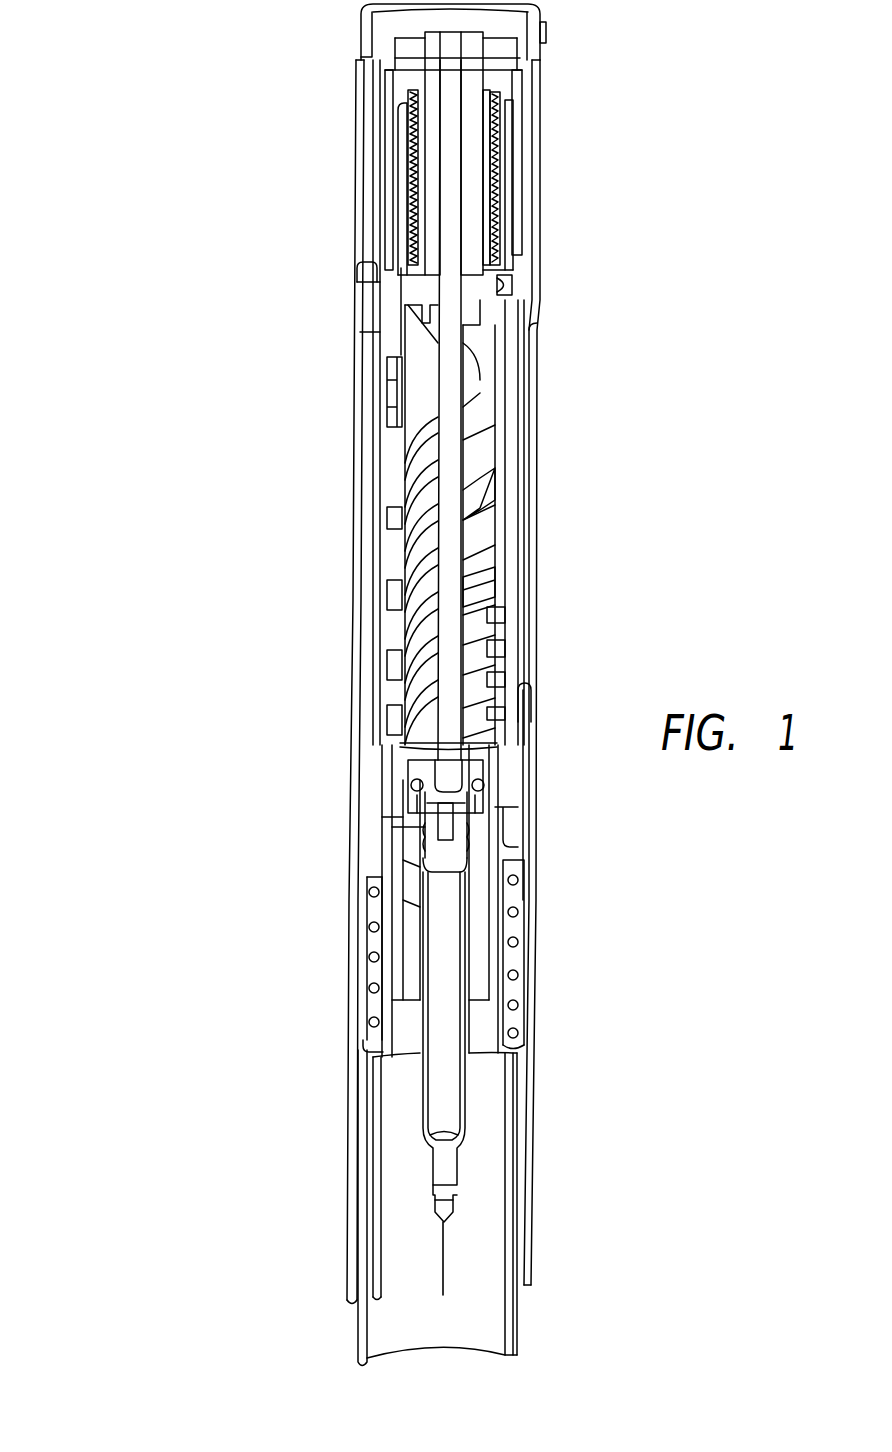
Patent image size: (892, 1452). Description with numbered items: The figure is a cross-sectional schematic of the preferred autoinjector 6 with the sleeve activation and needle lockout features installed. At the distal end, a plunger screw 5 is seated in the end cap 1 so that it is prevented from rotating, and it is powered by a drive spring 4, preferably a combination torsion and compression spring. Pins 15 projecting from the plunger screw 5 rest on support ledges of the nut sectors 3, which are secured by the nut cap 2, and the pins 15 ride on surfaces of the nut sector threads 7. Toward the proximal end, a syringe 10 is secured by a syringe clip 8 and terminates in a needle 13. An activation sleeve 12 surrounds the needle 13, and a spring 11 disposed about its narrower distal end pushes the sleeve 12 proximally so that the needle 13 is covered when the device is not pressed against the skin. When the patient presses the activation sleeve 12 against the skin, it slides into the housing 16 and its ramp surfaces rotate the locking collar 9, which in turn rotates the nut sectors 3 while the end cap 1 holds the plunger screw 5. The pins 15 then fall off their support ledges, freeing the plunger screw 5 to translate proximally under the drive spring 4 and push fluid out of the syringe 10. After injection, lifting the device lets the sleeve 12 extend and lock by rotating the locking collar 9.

The end cap 1 is at (395, 37).
The nut cap 2 is at (388, 128).
The nut sectors 3 is at (400, 195).
The drive spring 4 is at (410, 222).
The plunger screw 5 is at (452, 484).
The autoinjector 6 is at (340, 567).
The nut sector threads 7 is at (517, 558).
The syringe clip 8 is at (400, 766).
The locking collar 9 is at (370, 843).
The syringe 10 is at (438, 918).
The spring 11 is at (358, 1022).
The activation sleeve 12 is at (357, 1335).
The needle 13 is at (450, 1240).
The pins 15 is at (518, 282).
The housing 16 is at (537, 923).